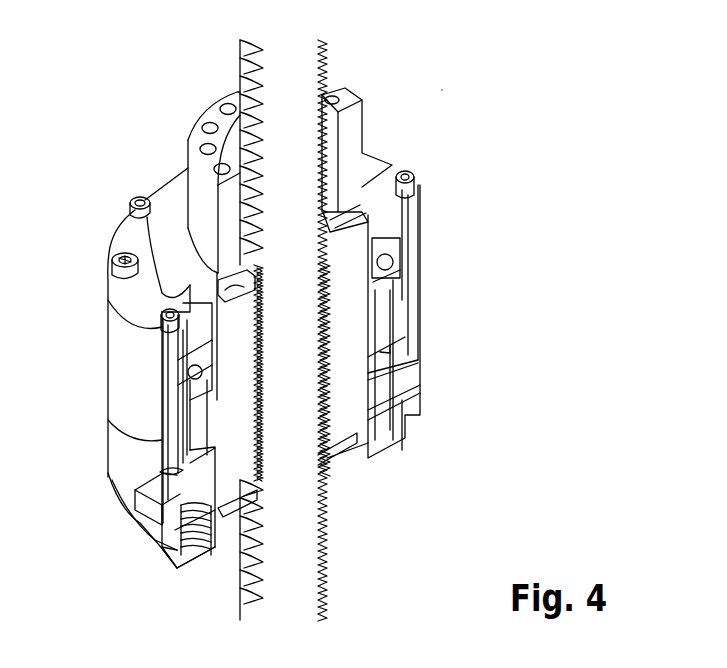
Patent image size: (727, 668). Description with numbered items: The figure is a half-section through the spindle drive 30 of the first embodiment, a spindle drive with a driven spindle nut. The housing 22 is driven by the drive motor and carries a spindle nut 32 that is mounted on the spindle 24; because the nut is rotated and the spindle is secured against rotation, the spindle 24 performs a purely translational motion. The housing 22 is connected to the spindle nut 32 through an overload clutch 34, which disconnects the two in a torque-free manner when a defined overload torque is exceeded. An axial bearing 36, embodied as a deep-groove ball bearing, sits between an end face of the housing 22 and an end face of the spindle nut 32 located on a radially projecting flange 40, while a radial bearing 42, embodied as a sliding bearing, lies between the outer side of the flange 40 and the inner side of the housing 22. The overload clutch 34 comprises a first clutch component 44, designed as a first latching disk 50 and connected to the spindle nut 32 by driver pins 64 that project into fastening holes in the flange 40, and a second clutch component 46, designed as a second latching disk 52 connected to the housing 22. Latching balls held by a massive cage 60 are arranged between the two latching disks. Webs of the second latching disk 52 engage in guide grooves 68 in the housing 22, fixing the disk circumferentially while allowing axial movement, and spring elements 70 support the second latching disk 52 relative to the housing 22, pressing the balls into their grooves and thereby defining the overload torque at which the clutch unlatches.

The spindle drive 30 is at (446, 84).
The housing 22 is at (122, 382).
The spindle 24 is at (307, 587).
The spindle nut 32 is at (350, 258).
The overload clutch 34 is at (160, 470).
The axial bearing 36 is at (192, 368).
The flange 40 is at (400, 325).
The radial bearing 42 is at (185, 420).
The first clutch component 44 is at (449, 346).
The first latching disk 50 is at (398, 346).
The second clutch component 46 is at (449, 405).
The second latching disk 52 is at (408, 373).
The cage 60 is at (135, 492).
The driver pins 64 is at (388, 300).
The guide grooves 68 is at (143, 520).
The spring elements 70 is at (162, 547).